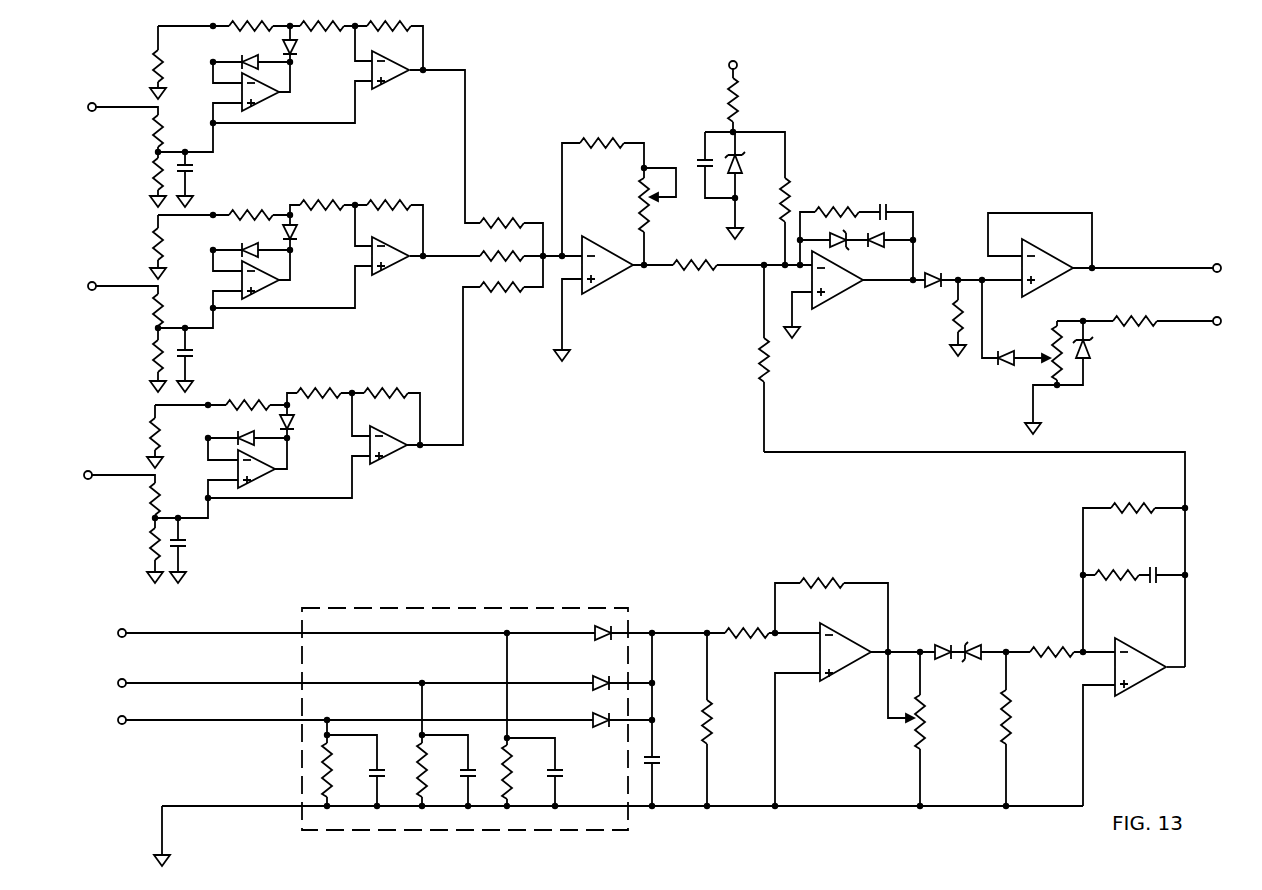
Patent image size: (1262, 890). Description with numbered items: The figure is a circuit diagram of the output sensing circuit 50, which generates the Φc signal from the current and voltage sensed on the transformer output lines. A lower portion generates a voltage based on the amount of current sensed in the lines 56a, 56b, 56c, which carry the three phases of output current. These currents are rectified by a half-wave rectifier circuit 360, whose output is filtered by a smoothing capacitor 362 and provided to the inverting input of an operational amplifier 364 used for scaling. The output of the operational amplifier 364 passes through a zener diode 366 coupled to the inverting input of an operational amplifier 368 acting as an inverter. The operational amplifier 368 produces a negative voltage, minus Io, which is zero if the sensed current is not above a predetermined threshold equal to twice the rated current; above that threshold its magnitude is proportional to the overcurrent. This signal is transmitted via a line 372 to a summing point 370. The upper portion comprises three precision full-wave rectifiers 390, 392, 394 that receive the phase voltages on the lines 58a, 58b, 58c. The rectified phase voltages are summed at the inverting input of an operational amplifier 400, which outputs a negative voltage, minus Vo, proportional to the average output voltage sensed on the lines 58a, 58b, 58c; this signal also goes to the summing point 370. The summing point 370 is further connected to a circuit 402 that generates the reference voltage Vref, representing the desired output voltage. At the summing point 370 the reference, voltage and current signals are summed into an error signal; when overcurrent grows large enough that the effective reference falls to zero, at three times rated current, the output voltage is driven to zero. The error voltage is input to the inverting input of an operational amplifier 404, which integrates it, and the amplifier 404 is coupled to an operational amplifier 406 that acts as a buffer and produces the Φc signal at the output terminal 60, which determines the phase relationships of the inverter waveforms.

The output sensing circuit 50 is at (955, 146).
The line 56a is at (152, 633).
The line 56b is at (152, 683).
The line 56c is at (152, 720).
The line 58a is at (112, 104).
The line 58b is at (112, 284).
The line 58c is at (110, 474).
The phase C output terminal 60 is at (1142, 266).
The half-wave rectifier circuit 360 is at (392, 604).
The smoothing capacitor 362 is at (656, 764).
The operational amplifier 364 is at (840, 672).
The zener diode 366 is at (985, 645).
The operational amplifier 368 is at (1140, 690).
The summing point 370 is at (766, 272).
The line 372 is at (870, 455).
The precision full-wave rectifier 390 is at (437, 60).
The precision full-wave rectifier 392 is at (368, 181).
The precision full-wave rectifier 394 is at (367, 368).
The operational amplifier 400 is at (618, 276).
The circuit 402 is at (797, 124).
The operational amplifier 404 is at (852, 292).
The operational amplifier 406 is at (1050, 284).